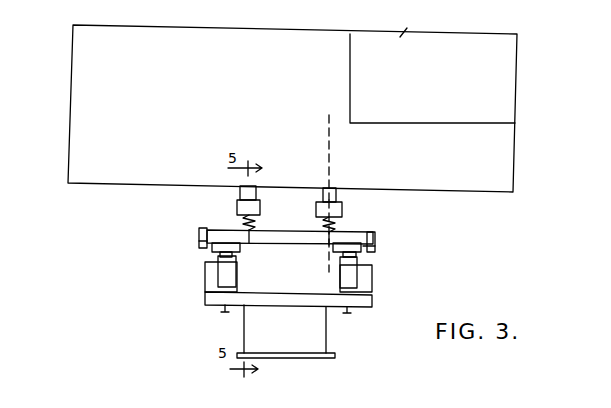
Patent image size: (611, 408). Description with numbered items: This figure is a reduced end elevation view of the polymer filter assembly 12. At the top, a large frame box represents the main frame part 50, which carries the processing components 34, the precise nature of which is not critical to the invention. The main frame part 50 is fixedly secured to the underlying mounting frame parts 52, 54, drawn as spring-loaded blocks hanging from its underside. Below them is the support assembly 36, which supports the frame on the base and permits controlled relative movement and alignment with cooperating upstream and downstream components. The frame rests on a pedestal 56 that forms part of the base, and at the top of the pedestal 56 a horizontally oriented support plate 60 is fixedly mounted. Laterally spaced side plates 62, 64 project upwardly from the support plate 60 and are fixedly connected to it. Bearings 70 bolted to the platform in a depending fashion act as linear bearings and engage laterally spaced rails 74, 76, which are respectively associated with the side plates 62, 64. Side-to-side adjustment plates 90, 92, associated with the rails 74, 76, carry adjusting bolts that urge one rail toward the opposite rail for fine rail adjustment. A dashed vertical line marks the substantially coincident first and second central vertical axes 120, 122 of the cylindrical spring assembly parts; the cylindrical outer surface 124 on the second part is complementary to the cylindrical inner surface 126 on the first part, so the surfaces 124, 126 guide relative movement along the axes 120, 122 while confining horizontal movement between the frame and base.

The polymer filter assembly 12 is at (533, 65).
The processing components 34 is at (432, 78).
The support assembly 36 is at (185, 305).
The main frame part 50 is at (273, 136).
The mounting frame part 52 is at (243, 200).
The mounting frame part 54 is at (341, 198).
The pedestal 56 is at (345, 337).
The support plate 60 is at (372, 301).
The side plate 62 is at (204, 278).
The side plate 64 is at (372, 280).
The bearing 70 is at (204, 226).
The rail 74 is at (358, 262).
The rail 76 is at (221, 258).
The side-to-side adjustment plate 90 is at (375, 235).
The side-to-side adjustment plate 92 is at (199, 237).
The first central vertical axis 120 is at (329, 142).
The second central vertical axis 122 is at (374, 209).
The cylindrical outer surface 124 is at (340, 228).
The cylindrical inner surface 126 is at (326, 210).